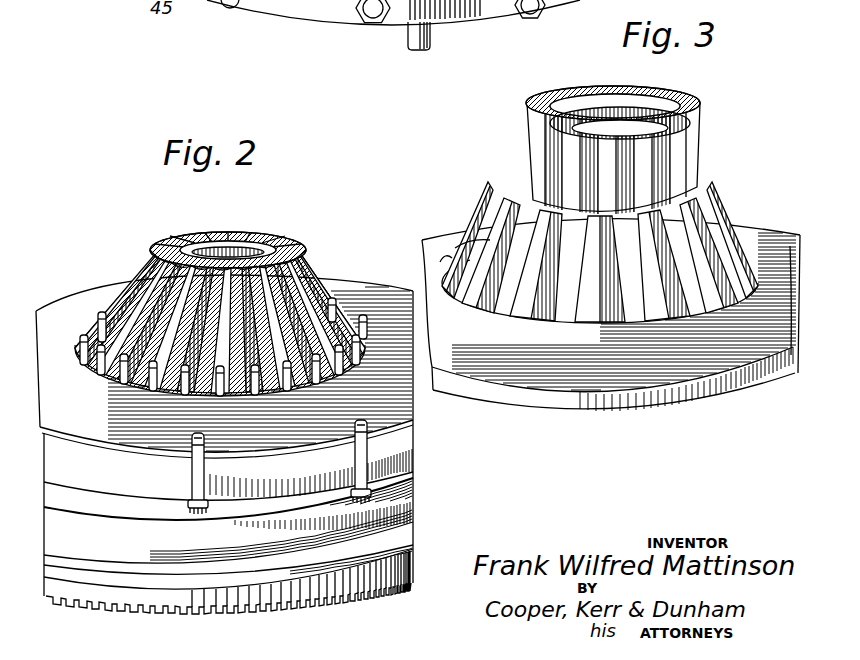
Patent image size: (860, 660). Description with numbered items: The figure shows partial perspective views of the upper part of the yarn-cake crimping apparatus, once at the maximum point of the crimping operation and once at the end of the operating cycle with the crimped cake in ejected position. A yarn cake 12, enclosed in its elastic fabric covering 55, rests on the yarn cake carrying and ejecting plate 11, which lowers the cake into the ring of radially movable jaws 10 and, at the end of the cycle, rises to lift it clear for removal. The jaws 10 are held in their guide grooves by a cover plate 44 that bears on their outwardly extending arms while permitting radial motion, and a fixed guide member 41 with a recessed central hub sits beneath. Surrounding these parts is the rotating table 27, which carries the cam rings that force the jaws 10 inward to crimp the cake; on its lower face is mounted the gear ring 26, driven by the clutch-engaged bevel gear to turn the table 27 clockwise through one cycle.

In FIG. 2, the radially movable jaws 10 is at (140, 263).
In FIG. 3, the radially movable jaws 10 is at (717, 200).
In FIG. 3, the yarn cake carrying and ejecting plate 11 is at (575, 237).
In FIG. 2, the yarn cake 12 is at (217, 225).
In FIG. 3, the yarn cake 12 is at (631, 85).
In FIG. 2, the fabric covering 55 is at (270, 233).
In FIG. 3, the fabric covering 55 is at (677, 95).
In FIG. 2, the cover plate 44 is at (352, 283).
In FIG. 3, the cover plate 44 is at (768, 230).
In FIG. 2, the fixed guide member 41 is at (413, 480).
In FIG. 2, the rotating table 27 is at (413, 538).
In FIG. 2, the gear ring 26 is at (392, 592).